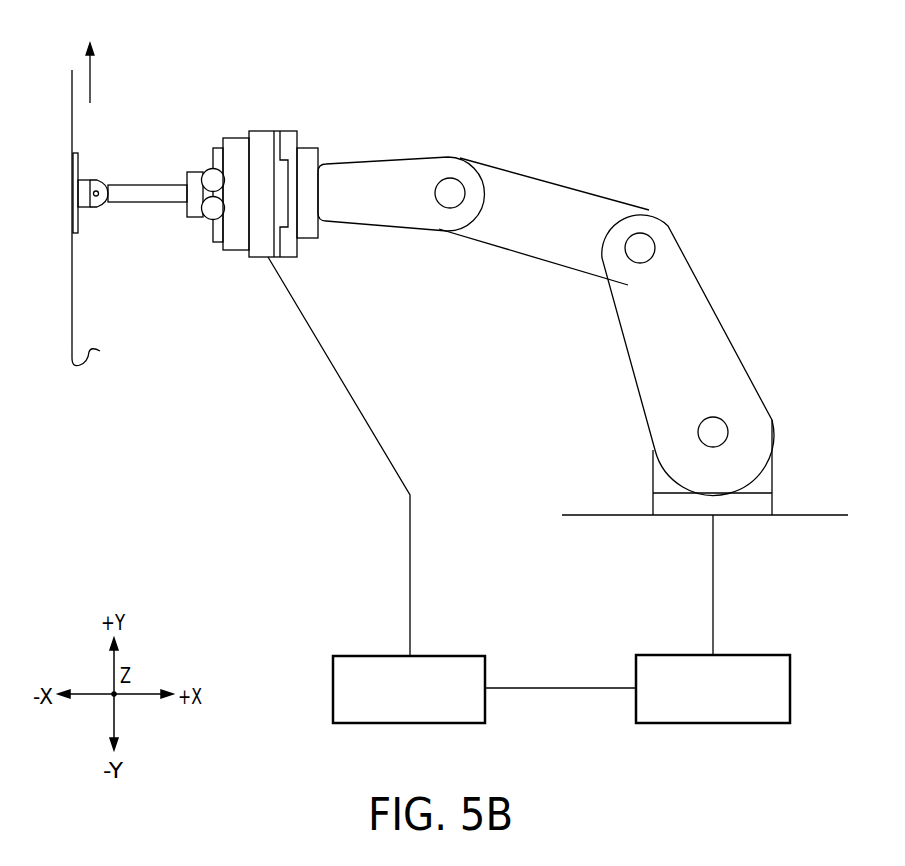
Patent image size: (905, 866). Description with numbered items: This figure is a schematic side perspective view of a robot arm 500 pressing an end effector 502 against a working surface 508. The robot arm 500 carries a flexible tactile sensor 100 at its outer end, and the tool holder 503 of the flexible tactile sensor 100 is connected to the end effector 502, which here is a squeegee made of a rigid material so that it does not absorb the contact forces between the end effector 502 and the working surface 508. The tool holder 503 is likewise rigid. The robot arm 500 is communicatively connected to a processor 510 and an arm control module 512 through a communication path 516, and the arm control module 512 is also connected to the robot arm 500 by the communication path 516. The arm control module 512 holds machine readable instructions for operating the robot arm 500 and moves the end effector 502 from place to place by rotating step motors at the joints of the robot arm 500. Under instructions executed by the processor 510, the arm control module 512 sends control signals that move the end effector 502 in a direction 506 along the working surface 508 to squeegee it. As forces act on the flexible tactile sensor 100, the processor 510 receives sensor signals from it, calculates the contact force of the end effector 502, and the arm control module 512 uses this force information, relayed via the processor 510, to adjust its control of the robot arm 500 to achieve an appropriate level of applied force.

The flexible tactile sensor 100 is at (253, 140).
The robot arm 500 is at (395, 173).
The end effector 502 is at (138, 238).
The tool holder 503 is at (207, 170).
The direction 506 is at (98, 62).
The working surface 508 is at (114, 219).
The processor 510 is at (333, 688).
The arm control module 512 is at (790, 688).
The communication path 516 is at (410, 526).